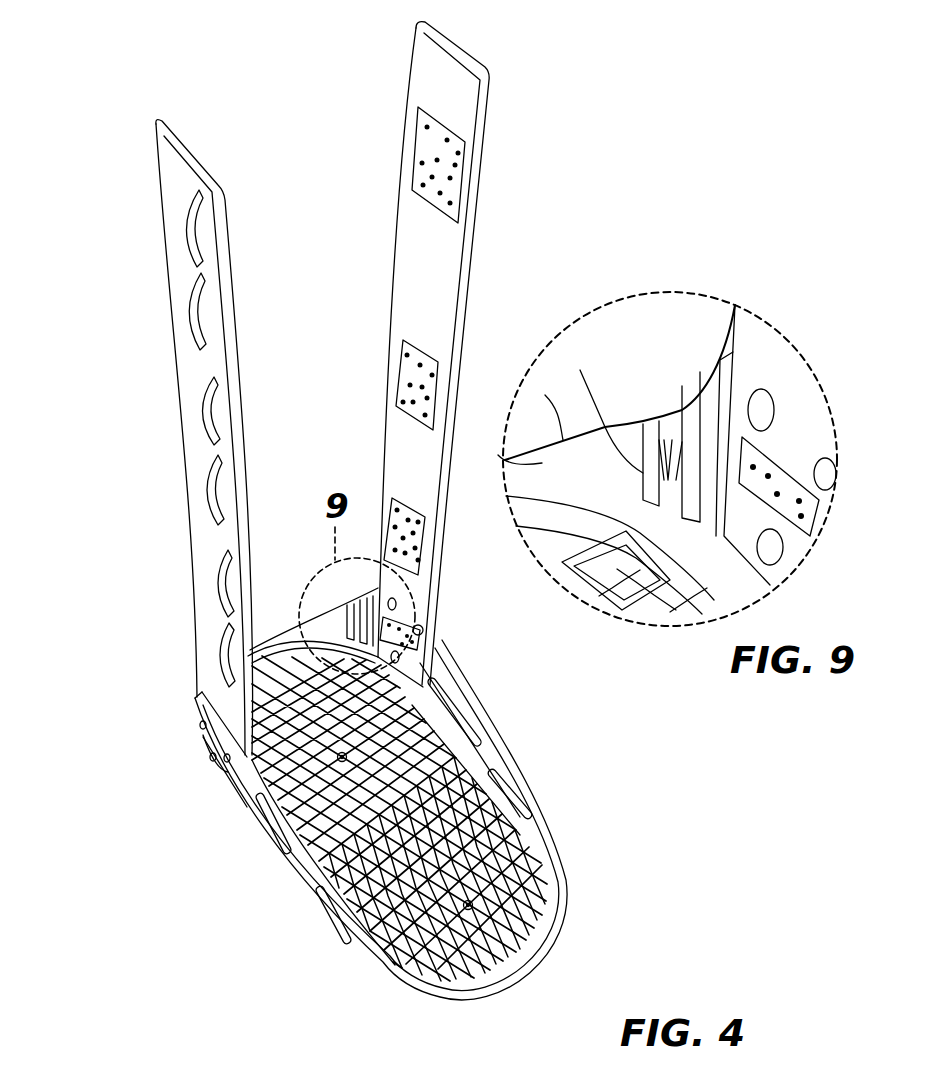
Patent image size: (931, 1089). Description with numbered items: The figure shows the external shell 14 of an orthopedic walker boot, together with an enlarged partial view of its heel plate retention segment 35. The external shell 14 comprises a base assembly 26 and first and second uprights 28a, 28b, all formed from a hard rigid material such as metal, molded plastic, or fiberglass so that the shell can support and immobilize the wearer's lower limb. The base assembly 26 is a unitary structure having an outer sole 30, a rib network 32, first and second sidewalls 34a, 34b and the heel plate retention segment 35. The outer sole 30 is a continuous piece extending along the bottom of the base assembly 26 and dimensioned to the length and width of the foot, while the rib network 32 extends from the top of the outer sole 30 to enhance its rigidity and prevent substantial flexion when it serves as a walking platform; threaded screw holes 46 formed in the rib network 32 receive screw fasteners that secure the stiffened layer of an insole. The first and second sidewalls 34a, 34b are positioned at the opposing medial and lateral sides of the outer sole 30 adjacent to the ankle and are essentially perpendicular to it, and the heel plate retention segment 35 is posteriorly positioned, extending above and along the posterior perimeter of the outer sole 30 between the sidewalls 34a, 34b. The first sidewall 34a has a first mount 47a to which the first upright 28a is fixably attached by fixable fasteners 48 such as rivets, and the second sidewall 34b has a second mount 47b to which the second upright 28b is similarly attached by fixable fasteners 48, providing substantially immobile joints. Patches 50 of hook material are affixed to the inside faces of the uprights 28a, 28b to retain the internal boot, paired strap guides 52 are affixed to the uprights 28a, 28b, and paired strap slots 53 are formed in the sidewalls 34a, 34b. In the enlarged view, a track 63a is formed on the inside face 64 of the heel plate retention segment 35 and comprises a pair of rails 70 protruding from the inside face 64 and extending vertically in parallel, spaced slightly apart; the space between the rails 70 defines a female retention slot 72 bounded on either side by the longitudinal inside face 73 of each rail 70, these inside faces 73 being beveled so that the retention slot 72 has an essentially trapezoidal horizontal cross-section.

In FIG. 4, the external shell 14 is at (48, 486).
In FIG. 4, the base assembly 26 is at (548, 861).
In FIG. 4, the first upright 28a is at (450, 64).
In FIG. 9, the first upright 28a is at (757, 367).
In FIG. 4, the second upright 28b is at (165, 156).
In FIG. 4, the outer sole 30 is at (520, 830).
In FIG. 4, the rib network 32 is at (396, 930).
In FIG. 9, the rib network 32 is at (611, 610).
In FIG. 4, the first sidewall 34a is at (506, 733).
In FIG. 4, the second sidewall 34b is at (298, 862).
In FIG. 4, the heel plate retention segment 35 is at (270, 633).
In FIG. 9, the heel plate retention segment 35 is at (545, 395).
In FIG. 4, the threaded screw holes 46 is at (445, 755).
In FIG. 4, the first mount 47a is at (437, 655).
In FIG. 9, the first mount 47a is at (755, 588).
In FIG. 4, the second mount 47b is at (220, 770).
In FIG. 4, the fixable fasteners 48 is at (202, 727).
In FIG. 9, the fixable fasteners 48 is at (774, 414).
In FIG. 4, the patches 50 is at (450, 180).
In FIG. 9, the patches 50 is at (819, 519).
In FIG. 4, the strap guides 52 is at (180, 222).
In FIG. 4, the strap slots 53 is at (441, 692).
In FIG. 9, the track 63a is at (580, 370).
In FIG. 4, the inside face 64 is at (291, 632).
In FIG. 9, the inside face 64 is at (500, 457).
In FIG. 9, the rails 70 is at (647, 424).
In FIG. 9, the female retention slot 72 is at (675, 440).
In FIG. 9, the longitudinal inside face 73 is at (665, 440).